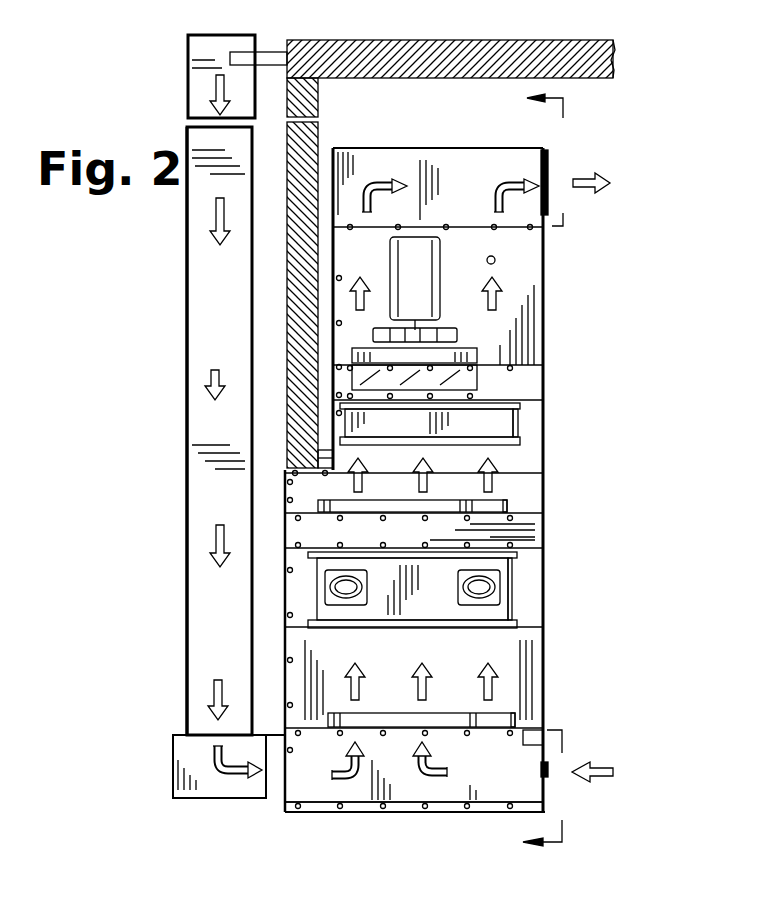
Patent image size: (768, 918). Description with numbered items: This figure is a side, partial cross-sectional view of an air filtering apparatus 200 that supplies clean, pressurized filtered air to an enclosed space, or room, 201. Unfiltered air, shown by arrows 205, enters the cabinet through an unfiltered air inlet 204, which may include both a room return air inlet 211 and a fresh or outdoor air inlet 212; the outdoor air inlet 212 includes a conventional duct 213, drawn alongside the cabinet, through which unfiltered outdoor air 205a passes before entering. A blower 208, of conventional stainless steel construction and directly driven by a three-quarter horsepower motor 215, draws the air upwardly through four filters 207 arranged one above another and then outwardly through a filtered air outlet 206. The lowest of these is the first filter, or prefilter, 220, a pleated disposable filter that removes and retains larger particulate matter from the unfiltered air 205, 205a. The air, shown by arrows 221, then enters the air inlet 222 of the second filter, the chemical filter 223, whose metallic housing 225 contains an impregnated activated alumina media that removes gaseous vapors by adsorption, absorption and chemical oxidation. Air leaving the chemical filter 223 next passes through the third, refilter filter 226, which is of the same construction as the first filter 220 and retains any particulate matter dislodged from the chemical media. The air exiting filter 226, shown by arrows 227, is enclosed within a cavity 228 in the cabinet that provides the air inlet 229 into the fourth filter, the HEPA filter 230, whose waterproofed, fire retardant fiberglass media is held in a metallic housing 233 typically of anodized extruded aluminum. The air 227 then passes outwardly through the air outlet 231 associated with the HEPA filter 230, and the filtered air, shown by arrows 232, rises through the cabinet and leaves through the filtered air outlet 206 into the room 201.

The air filtering apparatus 200 is at (546, 296).
The enclosed space 201 is at (482, 120).
The unfiltered air inlet 204 is at (275, 780).
The unfiltered air 205 is at (437, 777).
The unfiltered outdoor air 205a is at (207, 383).
The filtered air outlet 206 is at (548, 198).
The filter 207 is at (530, 425).
The blower 208 is at (373, 335).
The room return air inlet 211 is at (555, 793).
The outdoor air inlet 212 is at (180, 637).
The duct 213 is at (187, 560).
The motor 215 is at (392, 237).
The first filter 220 is at (503, 712).
The air 221 is at (347, 680).
The air inlet 222 is at (480, 633).
The chemical filter 223 is at (317, 590).
The housing 225 is at (512, 607).
The filter 226 is at (318, 505).
The air 227 is at (497, 462).
The cavity 228 is at (528, 487).
The air inlet 229 is at (380, 447).
The HEPA filter 230 is at (520, 412).
The air outlet 231 is at (498, 392).
The filtered air 232 is at (507, 175).
The housing 233 is at (340, 415).